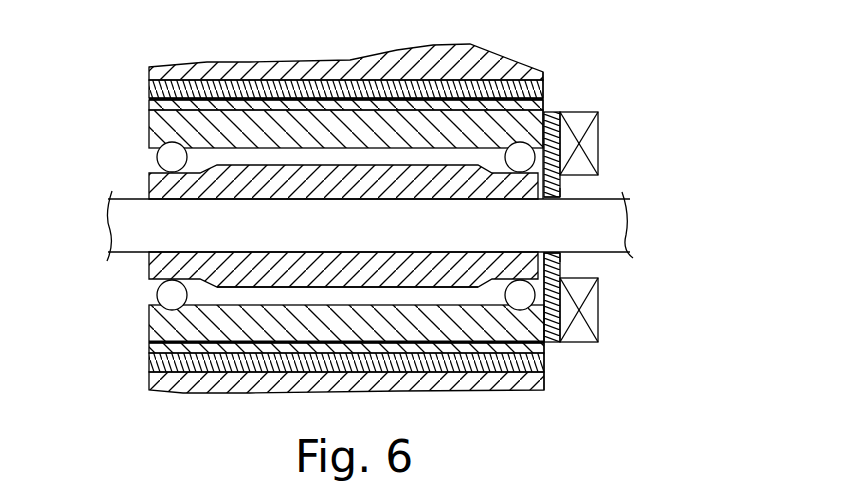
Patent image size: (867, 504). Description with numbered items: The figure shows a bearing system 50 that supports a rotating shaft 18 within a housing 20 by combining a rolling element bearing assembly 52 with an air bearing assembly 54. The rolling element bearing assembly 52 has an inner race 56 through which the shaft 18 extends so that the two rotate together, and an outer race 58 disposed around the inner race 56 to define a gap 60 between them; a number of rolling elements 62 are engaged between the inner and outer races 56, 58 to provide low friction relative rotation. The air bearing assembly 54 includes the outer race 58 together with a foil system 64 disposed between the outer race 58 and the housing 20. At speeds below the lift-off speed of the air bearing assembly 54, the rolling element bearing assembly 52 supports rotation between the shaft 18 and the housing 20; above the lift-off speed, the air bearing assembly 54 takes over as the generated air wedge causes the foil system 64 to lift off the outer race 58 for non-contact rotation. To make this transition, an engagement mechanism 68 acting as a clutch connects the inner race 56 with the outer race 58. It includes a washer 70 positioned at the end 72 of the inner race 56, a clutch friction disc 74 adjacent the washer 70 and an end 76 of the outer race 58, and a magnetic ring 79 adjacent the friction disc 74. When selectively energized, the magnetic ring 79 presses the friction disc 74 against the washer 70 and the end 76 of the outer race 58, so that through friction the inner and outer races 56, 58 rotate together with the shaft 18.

The shaft 18 is at (407, 239).
The housing 20 is at (297, 67).
The bearing system 50 is at (628, 130).
The rolling element bearing assembly 52 is at (153, 173).
The air bearing assembly 54 is at (149, 100).
The inner race 56 is at (152, 278).
The outer race 58 is at (253, 320).
The gap 60 is at (453, 295).
The rolling elements 62 is at (173, 293).
The foil system 64 is at (498, 92).
The engagement mechanism 68 is at (599, 119).
The washer 70 is at (547, 191).
The end of the inner race 72 is at (547, 268).
The clutch friction disc 74 is at (550, 166).
The end of the outer race 76 is at (547, 323).
The magnetic ring 79 is at (598, 308).